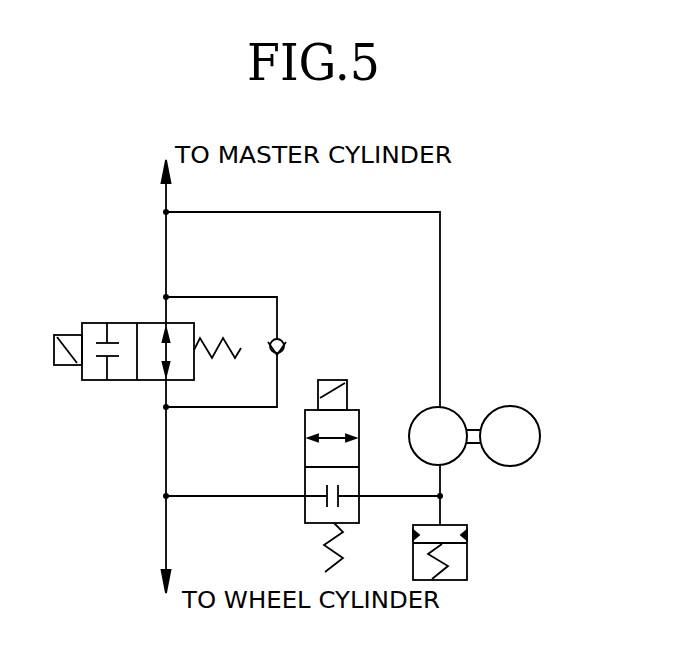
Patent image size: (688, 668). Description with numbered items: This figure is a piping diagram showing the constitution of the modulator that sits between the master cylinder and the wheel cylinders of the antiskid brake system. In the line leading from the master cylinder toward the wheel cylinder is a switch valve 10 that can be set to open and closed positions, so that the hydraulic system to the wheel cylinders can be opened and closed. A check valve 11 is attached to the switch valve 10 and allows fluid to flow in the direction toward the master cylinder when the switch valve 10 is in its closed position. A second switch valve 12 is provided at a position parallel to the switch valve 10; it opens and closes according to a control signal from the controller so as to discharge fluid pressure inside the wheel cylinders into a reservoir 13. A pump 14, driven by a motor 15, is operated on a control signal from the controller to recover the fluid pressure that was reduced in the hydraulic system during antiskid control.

The switch valve 10 is at (134, 323).
The check valve 11 is at (277, 305).
The switch valve 12 is at (305, 452).
The reservoir 13 is at (468, 555).
The pump 14 is at (453, 407).
The motor 15 is at (521, 406).